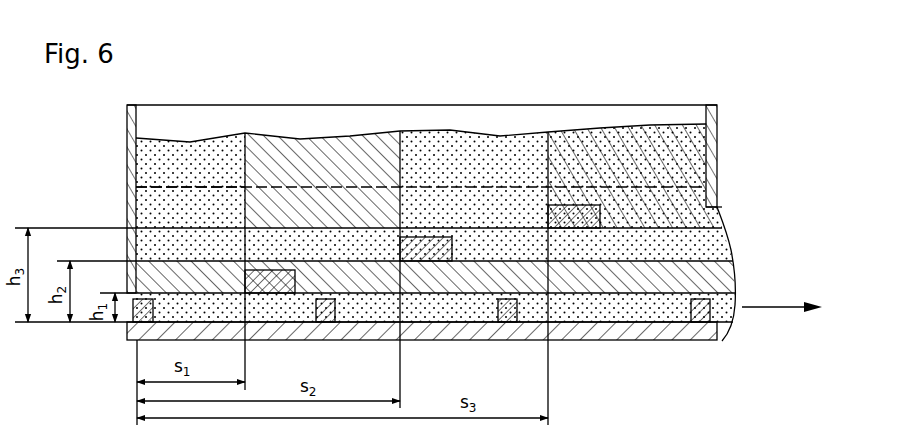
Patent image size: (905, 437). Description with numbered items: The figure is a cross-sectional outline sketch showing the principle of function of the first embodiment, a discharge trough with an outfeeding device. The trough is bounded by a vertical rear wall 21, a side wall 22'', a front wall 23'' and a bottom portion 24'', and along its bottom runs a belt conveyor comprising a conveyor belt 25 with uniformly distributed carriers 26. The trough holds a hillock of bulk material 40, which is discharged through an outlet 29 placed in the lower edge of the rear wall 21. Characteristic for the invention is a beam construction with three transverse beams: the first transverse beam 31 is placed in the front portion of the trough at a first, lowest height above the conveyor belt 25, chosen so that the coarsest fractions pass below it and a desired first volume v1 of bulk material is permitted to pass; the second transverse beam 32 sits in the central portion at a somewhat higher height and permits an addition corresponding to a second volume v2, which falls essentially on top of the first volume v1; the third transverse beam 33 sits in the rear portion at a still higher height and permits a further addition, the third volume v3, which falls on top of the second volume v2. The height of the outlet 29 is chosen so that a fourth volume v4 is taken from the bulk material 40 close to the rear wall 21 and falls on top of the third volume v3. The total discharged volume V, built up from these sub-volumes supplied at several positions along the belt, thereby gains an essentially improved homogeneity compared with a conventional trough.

The rear wall 21 is at (717, 114).
The side wall 22'' is at (429, 144).
The front wall 23'' is at (104, 199).
The bottom portion 24'' is at (190, 114).
The conveyor belt 25 is at (130, 335).
The carriers 26 is at (510, 305).
The outlet 29 is at (728, 240).
The first transverse beam 31 is at (283, 282).
The second transverse beam 32 is at (430, 258).
The third transverse beam 33 is at (577, 220).
The bulk material 40 is at (497, 148).
The first volume v1 is at (625, 300).
The second volume v2 is at (637, 270).
The third volume v3 is at (640, 238).
The fourth volume v4 is at (702, 218).
The discharged volume V is at (735, 257).